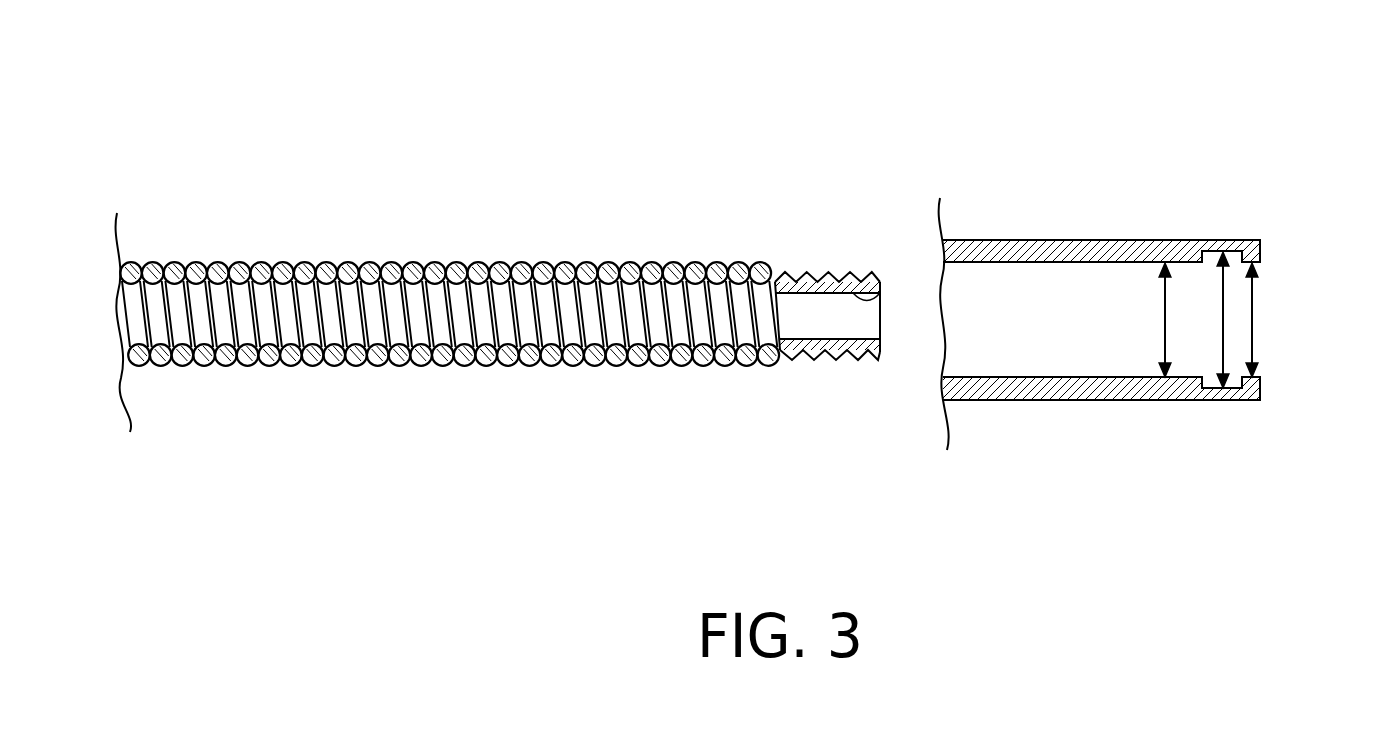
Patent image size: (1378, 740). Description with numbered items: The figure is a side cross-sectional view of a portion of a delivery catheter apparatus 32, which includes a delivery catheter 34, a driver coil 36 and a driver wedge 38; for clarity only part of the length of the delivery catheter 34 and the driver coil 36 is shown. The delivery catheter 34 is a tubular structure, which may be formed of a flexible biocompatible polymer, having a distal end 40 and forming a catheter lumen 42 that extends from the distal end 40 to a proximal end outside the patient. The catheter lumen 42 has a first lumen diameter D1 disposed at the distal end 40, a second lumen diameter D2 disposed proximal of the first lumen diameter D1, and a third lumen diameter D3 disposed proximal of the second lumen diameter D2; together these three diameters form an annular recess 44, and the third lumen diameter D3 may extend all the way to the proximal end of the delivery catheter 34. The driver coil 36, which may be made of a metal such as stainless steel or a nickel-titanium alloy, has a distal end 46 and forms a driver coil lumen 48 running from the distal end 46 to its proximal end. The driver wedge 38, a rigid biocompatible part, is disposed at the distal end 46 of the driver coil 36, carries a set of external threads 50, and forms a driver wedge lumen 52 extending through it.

The delivery catheter apparatus 32 is at (1147, 252).
The delivery catheter 34 is at (1110, 240).
The driver coil 36 is at (449, 296).
The driver wedge 38 is at (828, 322).
The distal end 40 is at (1262, 250).
The catheter lumen 42 is at (1093, 264).
The annular recess 44 is at (1210, 268).
The distal end 46 is at (773, 363).
The driver coil lumen 48 is at (600, 300).
The external threads 50 is at (822, 277).
The driver wedge lumen 52 is at (882, 288).
The first lumen diameter D1 is at (1262, 350).
The second lumen diameter D2 is at (1218, 357).
The third lumen diameter D3 is at (1165, 340).